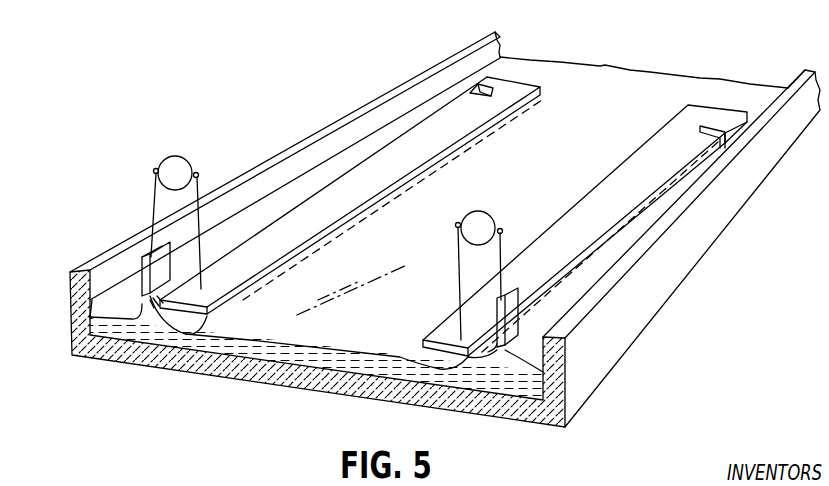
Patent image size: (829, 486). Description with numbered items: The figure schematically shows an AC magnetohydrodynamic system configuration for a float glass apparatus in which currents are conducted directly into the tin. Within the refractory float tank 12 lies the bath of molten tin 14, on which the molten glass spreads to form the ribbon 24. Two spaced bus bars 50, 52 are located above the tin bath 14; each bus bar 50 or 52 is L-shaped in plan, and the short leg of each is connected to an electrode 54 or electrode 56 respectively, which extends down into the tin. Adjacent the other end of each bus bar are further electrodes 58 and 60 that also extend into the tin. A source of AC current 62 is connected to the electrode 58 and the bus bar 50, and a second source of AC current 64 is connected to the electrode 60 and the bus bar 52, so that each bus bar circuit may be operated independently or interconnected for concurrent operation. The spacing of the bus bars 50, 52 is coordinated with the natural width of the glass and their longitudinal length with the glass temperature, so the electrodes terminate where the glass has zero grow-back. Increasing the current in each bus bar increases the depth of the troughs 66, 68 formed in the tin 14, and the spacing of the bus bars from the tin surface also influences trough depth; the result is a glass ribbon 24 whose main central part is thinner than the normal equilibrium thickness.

The refractory float tank 12 is at (70, 313).
The bath of molten tin 14 is at (116, 326).
The ribbon 24 is at (357, 343).
The bus bar 50 is at (284, 248).
The bus bar 52 is at (448, 318).
The electrode 54 is at (472, 94).
The electrode 56 is at (718, 140).
The electrode 58 is at (141, 259).
The electrode 60 is at (517, 293).
The source of AC current 62 is at (181, 156).
The source of AC current 64 is at (484, 212).
The trough 66 is at (156, 318).
The trough 68 is at (500, 352).